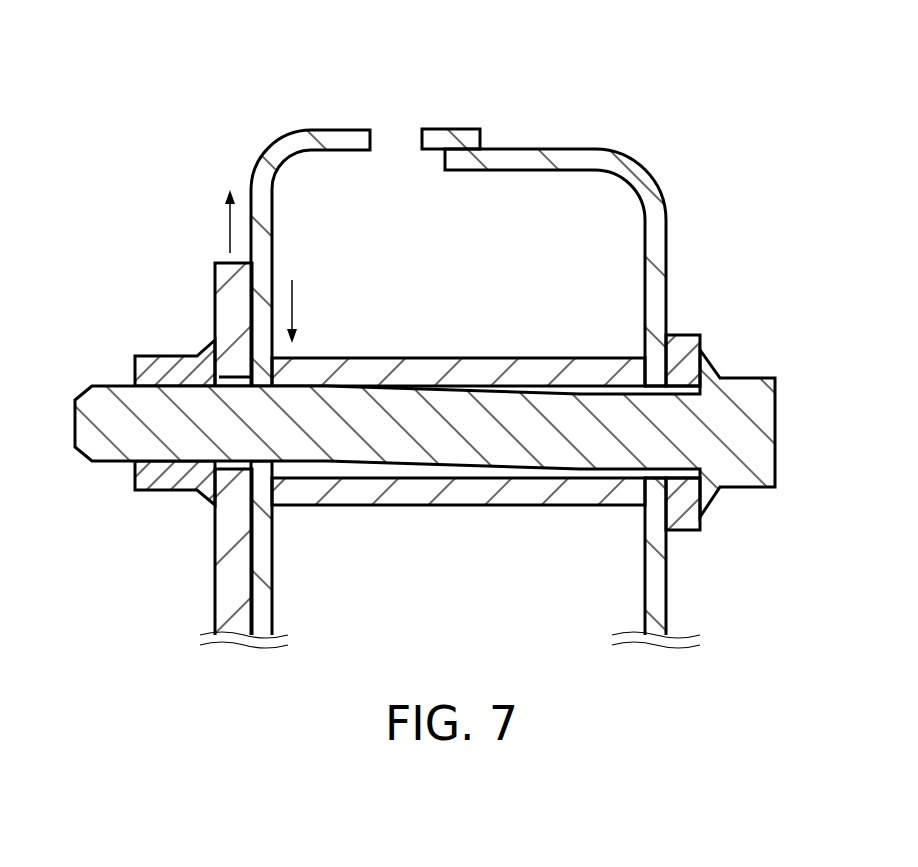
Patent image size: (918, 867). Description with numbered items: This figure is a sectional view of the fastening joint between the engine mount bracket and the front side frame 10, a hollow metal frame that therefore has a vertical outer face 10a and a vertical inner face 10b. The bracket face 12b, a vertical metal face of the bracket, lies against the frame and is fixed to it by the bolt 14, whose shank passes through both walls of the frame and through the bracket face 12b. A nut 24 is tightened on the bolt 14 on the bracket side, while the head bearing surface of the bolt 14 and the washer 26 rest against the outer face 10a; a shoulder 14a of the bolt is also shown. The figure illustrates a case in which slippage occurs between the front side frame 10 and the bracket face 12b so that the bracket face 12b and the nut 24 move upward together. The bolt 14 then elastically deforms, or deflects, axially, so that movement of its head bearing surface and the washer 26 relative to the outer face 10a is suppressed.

The front side frame 10 is at (440, 104).
The vertical outer face 10a is at (645, 322).
The vertical inner face 10b is at (273, 253).
The bracket face 12b is at (215, 307).
The bolt 14 is at (775, 430).
The shaft shoulder 14a is at (697, 533).
The nut 24 is at (135, 373).
The washer 26 is at (685, 335).